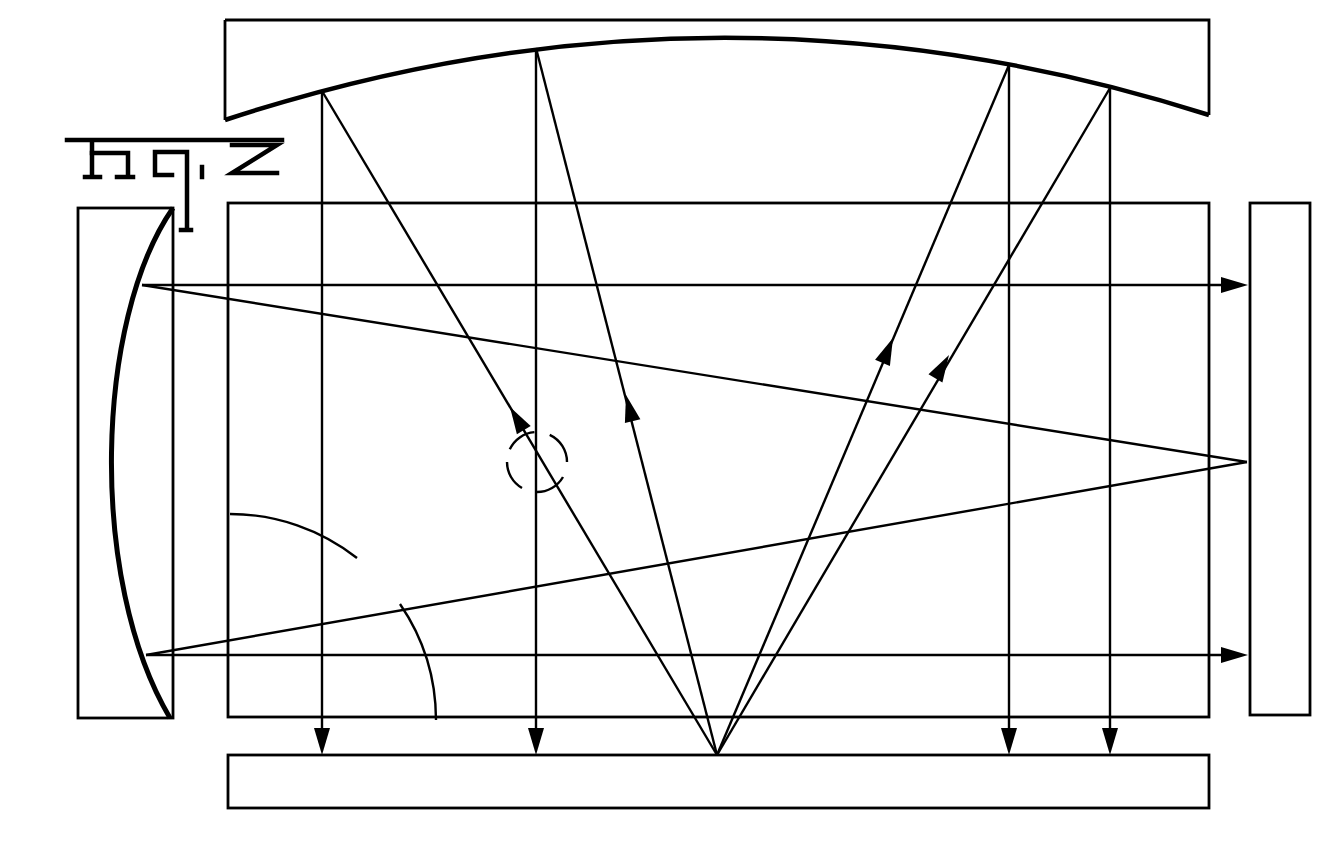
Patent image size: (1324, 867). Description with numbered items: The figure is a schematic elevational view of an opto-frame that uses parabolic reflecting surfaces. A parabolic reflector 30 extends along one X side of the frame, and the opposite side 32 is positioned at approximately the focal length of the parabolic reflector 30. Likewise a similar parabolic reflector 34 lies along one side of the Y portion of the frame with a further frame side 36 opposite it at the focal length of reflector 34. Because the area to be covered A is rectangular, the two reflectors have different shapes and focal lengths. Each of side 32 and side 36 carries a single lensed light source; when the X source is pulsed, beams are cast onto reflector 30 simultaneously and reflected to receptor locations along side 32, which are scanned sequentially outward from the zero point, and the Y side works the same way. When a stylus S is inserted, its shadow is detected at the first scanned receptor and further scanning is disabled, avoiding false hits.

The parabolic reflector 30 is at (1155, 67).
The opposite side 32 is at (1117, 798).
The parabolic reflector 34 is at (105, 682).
The frame side 36 is at (1255, 676).
The area to be covered A is at (333, 617).
The stylus S is at (505, 466).